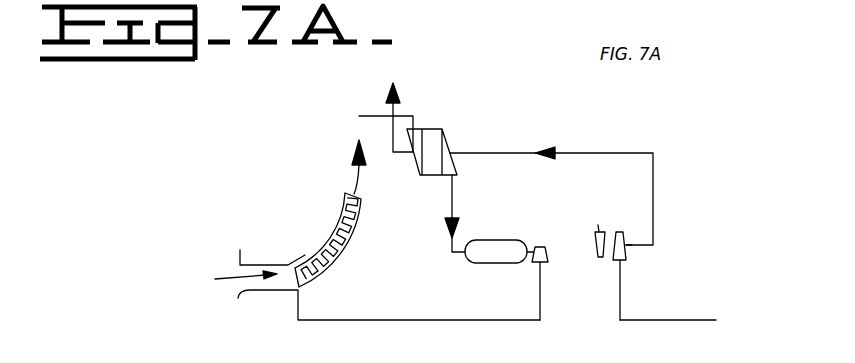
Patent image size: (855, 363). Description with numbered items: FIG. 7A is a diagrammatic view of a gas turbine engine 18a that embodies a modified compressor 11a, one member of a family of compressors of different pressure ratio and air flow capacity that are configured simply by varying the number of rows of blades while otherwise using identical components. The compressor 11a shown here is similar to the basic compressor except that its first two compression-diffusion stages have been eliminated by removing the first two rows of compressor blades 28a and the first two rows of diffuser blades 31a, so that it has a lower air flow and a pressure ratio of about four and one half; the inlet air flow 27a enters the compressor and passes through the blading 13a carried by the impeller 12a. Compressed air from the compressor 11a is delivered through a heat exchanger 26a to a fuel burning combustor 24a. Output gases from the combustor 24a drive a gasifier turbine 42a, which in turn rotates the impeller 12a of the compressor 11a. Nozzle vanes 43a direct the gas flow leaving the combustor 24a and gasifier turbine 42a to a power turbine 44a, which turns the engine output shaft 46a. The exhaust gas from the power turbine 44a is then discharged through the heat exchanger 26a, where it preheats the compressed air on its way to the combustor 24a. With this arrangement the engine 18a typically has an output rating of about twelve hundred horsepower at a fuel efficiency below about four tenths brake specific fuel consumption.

The compressor 11a is at (277, 167).
The impeller 12a is at (346, 238).
The heat exchanger fins 13a is at (338, 220).
The inlet conduit 31a is at (302, 256).
The inlet air flow 27a is at (225, 279).
The outlet conduit 28a is at (301, 282).
The heat exchanger 26a is at (437, 146).
The fuel burning combustor 24a is at (478, 240).
The gasifier turbine 42a is at (539, 247).
The nozzle vanes 43a is at (600, 257).
The power turbine 44a is at (626, 250).
The engine output shaft 46a is at (658, 320).
The gas turbine engine 18a is at (700, 126).